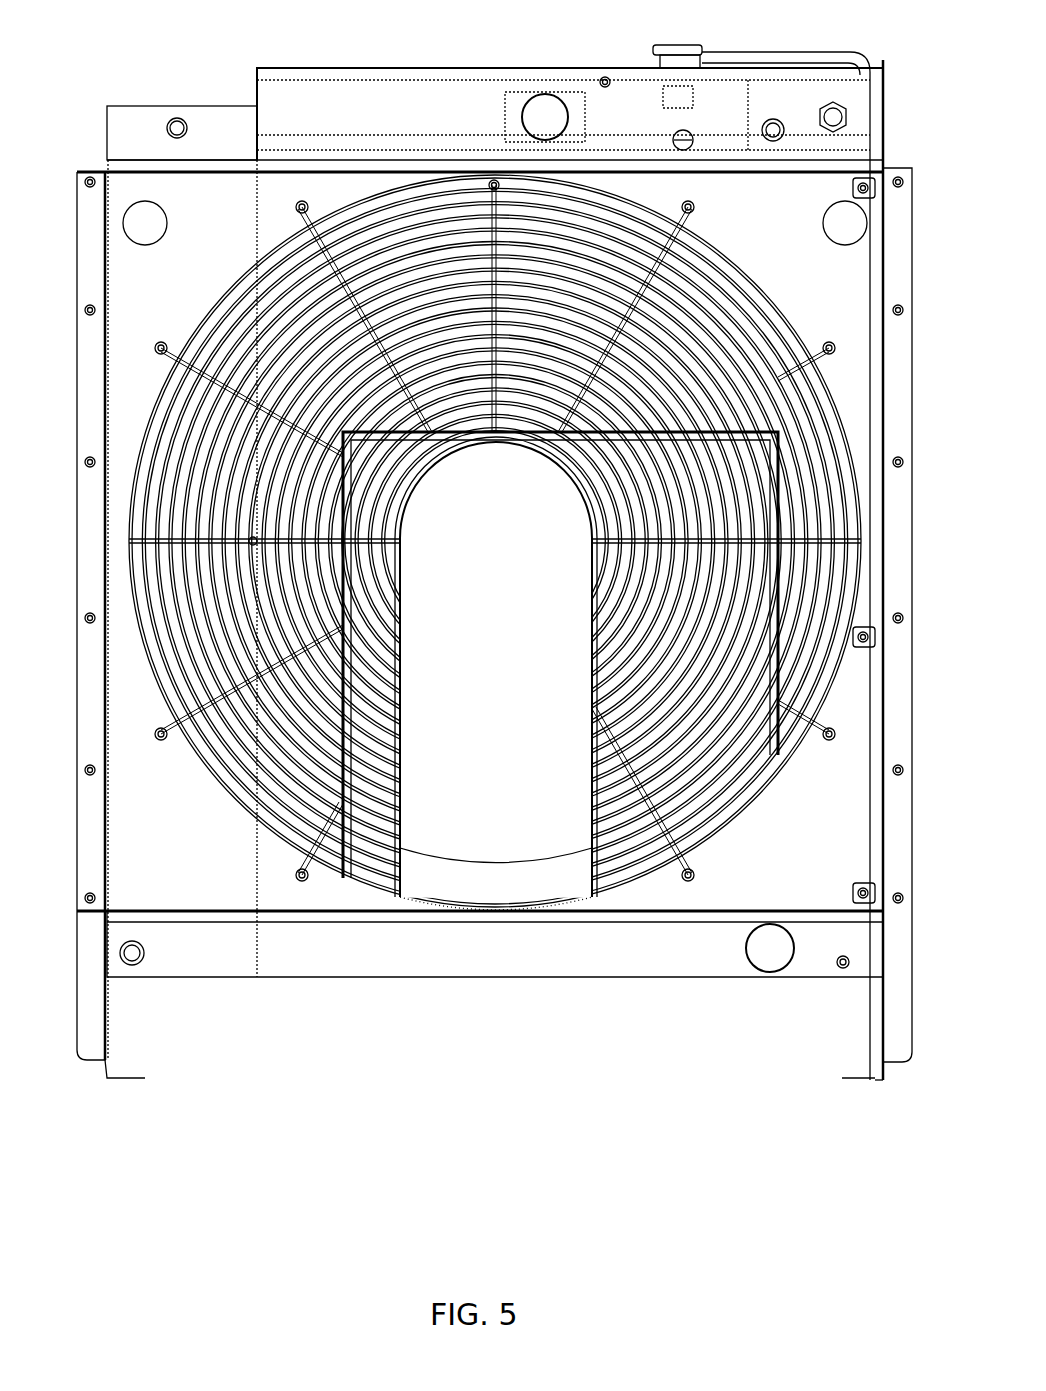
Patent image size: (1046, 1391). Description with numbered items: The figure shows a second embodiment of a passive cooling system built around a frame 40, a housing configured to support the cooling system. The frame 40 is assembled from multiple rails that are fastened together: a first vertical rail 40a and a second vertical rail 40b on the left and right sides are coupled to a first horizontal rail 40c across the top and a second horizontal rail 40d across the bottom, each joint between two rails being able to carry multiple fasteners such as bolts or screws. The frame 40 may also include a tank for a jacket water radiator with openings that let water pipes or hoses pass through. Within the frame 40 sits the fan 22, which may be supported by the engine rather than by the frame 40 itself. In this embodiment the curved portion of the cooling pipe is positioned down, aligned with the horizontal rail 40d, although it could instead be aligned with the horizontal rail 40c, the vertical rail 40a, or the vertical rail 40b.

The fan 22 is at (240, 292).
The frame 40 is at (278, 80).
The first vertical rail 40a is at (100, 170).
The second vertical rail 40b is at (900, 172).
The first horizontal rail 40c is at (510, 70).
The second horizontal rail 40d is at (605, 978).